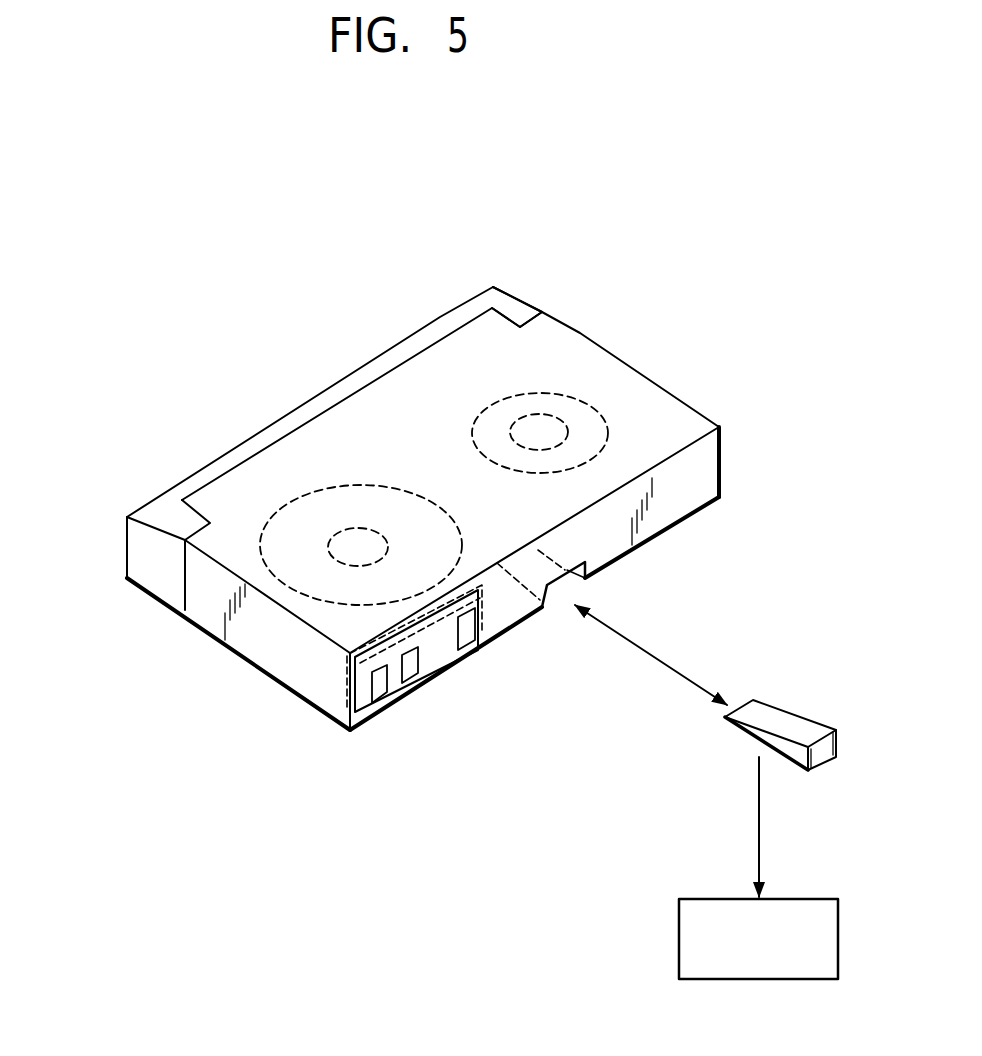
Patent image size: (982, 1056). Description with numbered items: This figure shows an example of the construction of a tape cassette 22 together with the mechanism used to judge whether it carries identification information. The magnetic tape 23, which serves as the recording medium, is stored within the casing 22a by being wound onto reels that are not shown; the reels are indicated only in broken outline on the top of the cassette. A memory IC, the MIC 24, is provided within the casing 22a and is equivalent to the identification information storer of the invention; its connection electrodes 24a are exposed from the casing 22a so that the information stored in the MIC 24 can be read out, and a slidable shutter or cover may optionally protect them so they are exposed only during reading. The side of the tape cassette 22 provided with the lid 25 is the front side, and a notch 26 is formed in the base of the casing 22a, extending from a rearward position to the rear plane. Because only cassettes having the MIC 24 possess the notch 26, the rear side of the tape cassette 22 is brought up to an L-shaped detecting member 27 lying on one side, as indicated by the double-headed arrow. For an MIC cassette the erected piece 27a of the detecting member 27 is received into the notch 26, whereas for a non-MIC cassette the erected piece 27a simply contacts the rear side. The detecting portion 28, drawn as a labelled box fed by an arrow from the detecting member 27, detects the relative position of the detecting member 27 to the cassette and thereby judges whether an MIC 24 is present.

The tape cassette 22 is at (640, 228).
The casing 22a is at (555, 332).
The magnetic tape 23 is at (297, 588).
The memory IC (MIC) 24 is at (345, 681).
The connection electrodes 24a is at (465, 629).
The lid 25 is at (497, 293).
The notch 26 is at (563, 578).
The L-shaped detecting member 27 is at (773, 725).
The erected piece 27a is at (823, 757).
The detecting portion 28 is at (679, 947).